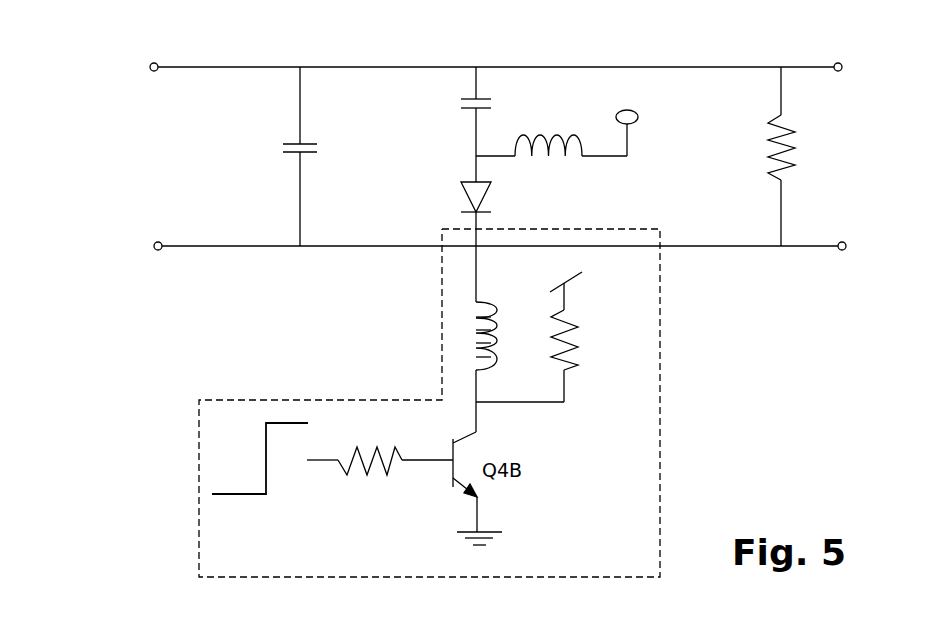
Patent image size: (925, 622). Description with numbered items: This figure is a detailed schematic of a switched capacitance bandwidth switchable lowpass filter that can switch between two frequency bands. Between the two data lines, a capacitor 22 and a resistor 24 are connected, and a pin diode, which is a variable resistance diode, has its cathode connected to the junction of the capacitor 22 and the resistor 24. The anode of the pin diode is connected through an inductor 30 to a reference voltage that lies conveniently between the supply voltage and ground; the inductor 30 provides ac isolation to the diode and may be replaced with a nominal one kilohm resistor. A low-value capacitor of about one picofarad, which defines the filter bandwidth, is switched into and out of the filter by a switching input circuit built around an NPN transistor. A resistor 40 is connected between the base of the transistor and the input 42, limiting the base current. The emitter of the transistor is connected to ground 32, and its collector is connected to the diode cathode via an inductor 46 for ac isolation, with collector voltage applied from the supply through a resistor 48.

The capacitor 22 is at (280, 156).
The resistor 24 is at (764, 156).
The inductor 30 is at (580, 133).
The ground 32 is at (494, 544).
The resistor 40 is at (380, 452).
The input 42 is at (223, 494).
The inductor 46 is at (501, 367).
The resistor 48 is at (550, 334).